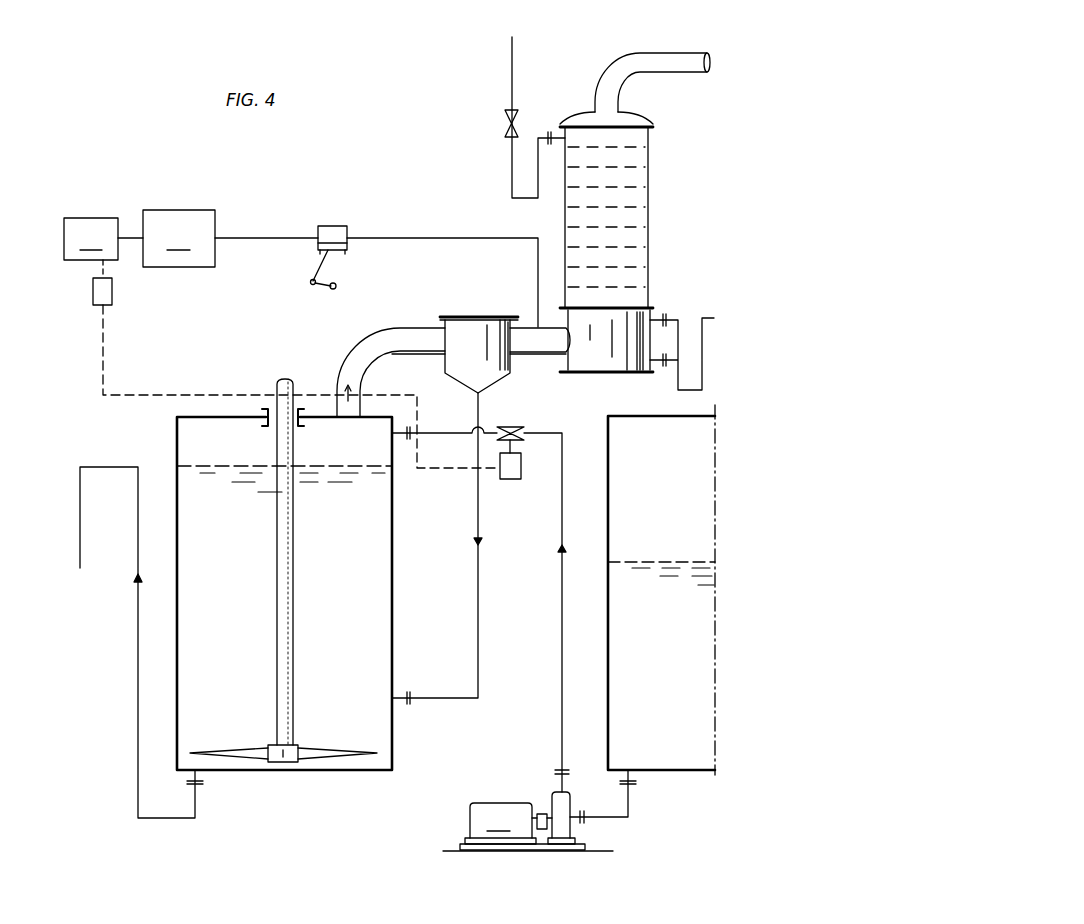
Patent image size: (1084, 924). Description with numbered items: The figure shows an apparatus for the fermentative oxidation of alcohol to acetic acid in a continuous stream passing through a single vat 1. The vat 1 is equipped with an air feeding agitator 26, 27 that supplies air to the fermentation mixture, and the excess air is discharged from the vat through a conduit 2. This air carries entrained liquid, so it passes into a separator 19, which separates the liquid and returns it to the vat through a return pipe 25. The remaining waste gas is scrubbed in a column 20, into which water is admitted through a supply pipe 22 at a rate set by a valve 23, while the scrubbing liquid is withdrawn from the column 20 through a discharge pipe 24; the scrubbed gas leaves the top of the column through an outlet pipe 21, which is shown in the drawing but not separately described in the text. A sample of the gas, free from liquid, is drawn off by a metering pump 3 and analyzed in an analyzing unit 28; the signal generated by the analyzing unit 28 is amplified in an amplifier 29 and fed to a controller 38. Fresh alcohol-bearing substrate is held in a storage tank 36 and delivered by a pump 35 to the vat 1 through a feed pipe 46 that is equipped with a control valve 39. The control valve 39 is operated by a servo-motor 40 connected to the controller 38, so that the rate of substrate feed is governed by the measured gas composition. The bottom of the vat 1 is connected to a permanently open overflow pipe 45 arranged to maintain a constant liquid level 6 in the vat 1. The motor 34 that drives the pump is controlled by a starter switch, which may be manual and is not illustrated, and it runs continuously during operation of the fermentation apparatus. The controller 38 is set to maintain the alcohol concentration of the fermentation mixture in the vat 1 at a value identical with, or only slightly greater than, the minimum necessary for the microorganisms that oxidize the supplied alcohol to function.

The vat 1 is at (392, 583).
The conduit 2 is at (385, 342).
The metering pump 3 is at (337, 233).
The liquid level 6 is at (322, 466).
The separator 19 is at (474, 335).
The column 20 is at (648, 218).
The exhaust pipe 21 is at (695, 68).
The supply pipe 22 is at (512, 52).
The valve 23 is at (505, 124).
The discharge pipe 24 is at (695, 349).
The return pipe 25 is at (476, 545).
The air feeding agitator 26 is at (285, 578).
The air feeding agitator 27 is at (330, 748).
The analyzing unit 28 is at (218, 238).
The amplifier 29 is at (91, 239).
The motor 34 is at (508, 823).
The pump 35 is at (559, 800).
The storage tank 36 is at (608, 642).
The controller 38 is at (112, 295).
The control valve 39 is at (516, 428).
The servo-motor 40 is at (510, 475).
The overflow pipe 45 is at (138, 625).
The feed pipe 46 is at (561, 598).